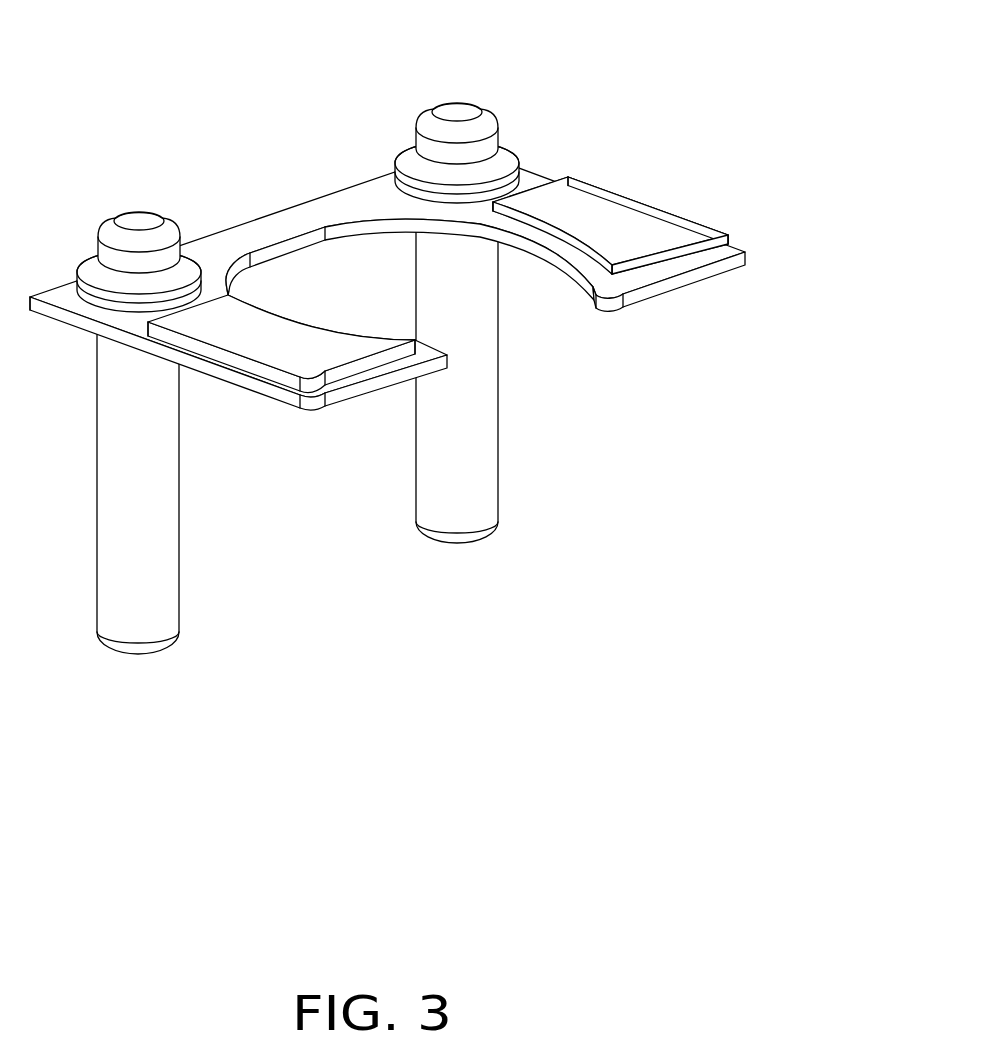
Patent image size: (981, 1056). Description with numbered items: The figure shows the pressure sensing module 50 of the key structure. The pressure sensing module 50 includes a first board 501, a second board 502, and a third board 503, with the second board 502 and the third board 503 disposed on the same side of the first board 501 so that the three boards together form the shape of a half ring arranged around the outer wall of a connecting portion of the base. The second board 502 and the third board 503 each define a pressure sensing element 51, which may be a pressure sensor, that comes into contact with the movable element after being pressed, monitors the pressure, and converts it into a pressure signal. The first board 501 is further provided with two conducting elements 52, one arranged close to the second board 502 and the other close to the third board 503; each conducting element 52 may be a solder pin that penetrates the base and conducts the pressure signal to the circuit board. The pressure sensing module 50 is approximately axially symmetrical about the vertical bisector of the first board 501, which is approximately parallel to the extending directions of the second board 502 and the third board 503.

The pressure sensing module 50 is at (422, 337).
The first board 501 is at (318, 212).
The second board 502 is at (278, 400).
The third board 503 is at (737, 245).
The pressure sensing element 51 is at (585, 198).
The conducting element 52 is at (297, 439).